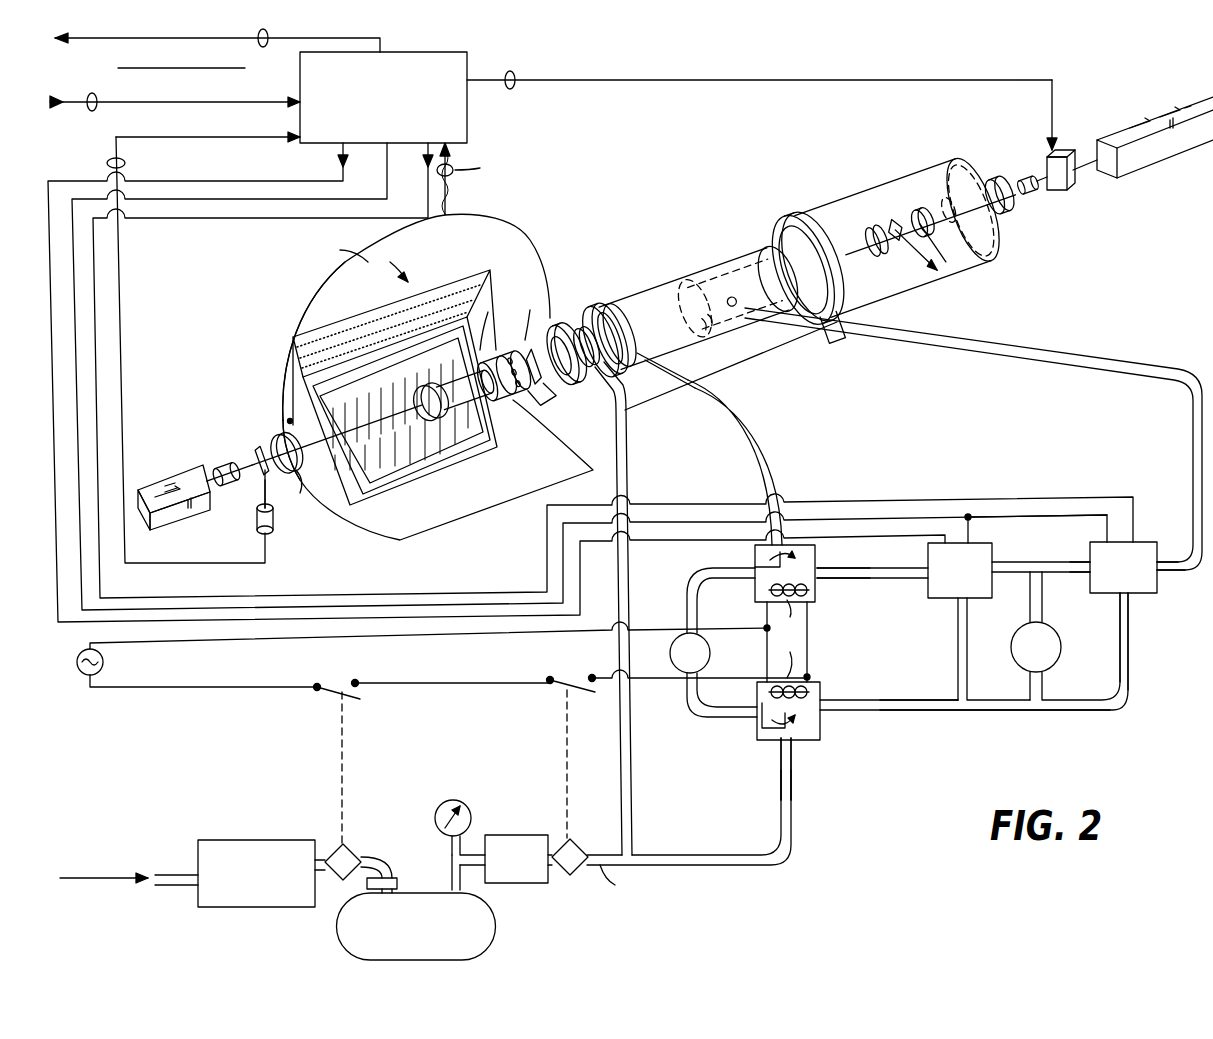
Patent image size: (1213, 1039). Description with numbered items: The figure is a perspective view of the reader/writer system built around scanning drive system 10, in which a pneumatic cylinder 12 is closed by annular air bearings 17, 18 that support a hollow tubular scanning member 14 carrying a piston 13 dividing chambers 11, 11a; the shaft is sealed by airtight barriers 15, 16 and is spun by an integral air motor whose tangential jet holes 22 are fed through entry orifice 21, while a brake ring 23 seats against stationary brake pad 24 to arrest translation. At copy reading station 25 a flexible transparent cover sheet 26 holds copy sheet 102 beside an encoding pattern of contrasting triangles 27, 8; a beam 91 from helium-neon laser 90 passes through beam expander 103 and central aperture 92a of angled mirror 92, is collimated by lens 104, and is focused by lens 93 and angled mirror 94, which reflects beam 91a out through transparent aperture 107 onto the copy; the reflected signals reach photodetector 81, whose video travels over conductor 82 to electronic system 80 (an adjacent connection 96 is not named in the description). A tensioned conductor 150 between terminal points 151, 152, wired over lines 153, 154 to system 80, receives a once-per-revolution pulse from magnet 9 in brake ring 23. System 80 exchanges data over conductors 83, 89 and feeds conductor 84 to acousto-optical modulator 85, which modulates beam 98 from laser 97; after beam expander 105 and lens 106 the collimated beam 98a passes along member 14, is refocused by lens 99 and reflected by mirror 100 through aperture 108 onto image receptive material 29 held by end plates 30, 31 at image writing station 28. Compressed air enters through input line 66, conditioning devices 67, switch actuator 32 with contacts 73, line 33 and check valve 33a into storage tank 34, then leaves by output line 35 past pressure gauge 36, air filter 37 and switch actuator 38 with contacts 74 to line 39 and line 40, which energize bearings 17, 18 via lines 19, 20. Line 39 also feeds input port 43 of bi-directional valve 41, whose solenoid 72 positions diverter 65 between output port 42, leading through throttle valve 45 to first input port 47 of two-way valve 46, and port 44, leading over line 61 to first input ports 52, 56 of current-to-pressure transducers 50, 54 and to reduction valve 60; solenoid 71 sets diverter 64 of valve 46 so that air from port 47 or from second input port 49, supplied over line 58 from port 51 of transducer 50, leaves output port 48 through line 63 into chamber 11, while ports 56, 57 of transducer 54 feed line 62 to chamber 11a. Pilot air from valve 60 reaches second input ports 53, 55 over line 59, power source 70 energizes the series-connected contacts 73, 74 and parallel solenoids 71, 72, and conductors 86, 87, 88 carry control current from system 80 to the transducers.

The optically contrasting triangle 8 is at (297, 345).
The permanent magnet 9 is at (503, 358).
The scanning drive system 10 is at (780, 340).
The chamber 11 is at (660, 292).
The chamber 11a is at (692, 285).
The pneumatic cylinder 12 is at (712, 280).
The piston 13 is at (708, 326).
The optical scanning member 14 is at (400, 455).
The internal airtight barrier 15 is at (522, 402).
The internal airtight barrier 16 is at (872, 238).
The annular air bearing 17 is at (604, 310).
The annular air bearing 18 is at (778, 250).
The air line 19 is at (610, 408).
The air line 20 is at (830, 335).
The entry orifice 21 is at (733, 308).
The air motor 22 is at (572, 382).
The brake ring 23 is at (564, 388).
The brake pad 24 is at (592, 308).
The copy reading station 25 is at (394, 264).
The cover sheet 26 is at (400, 542).
The optically contrasting triangle 27 is at (380, 316).
The image writing station 28 is at (900, 163).
The image receptive material 29 is at (990, 268).
The end plate 30 is at (803, 215).
The end plate 31 is at (970, 165).
The first pneumatic pressure-controlled switch actuator 32 is at (338, 845).
The line 33 is at (385, 858).
The check valve 33a is at (388, 892).
The air storage tank 34 is at (405, 890).
The output air line 35 is at (450, 885).
The pressure gauge 36 is at (436, 814).
The final air filter 37 is at (538, 838).
The second pneumatic pressure-controlled switch actuator 38 is at (565, 875).
The output air line 39 is at (620, 880).
The air line 40 is at (632, 800).
The first bi-directional air control valve 41 is at (815, 676).
The first output port 42 is at (752, 718).
The input port 43 is at (795, 750).
The port 44 is at (825, 712).
The throttle valve 45 is at (710, 658).
The second two-way air valve 46 is at (810, 605).
The first input port 47 is at (752, 580).
The output port 48 is at (815, 548).
The second input port 49 is at (822, 580).
The current-to-pressure transducer 50 is at (985, 550).
The port 51 is at (925, 562).
The first input port 52 is at (958, 605).
The second input port 53 is at (1028, 580).
The current-to-pressure transducer 54 is at (1092, 552).
The second input port 55 is at (1090, 578).
The first input port 56 is at (1118, 605).
The port 57 is at (1165, 575).
The line 58 is at (885, 575).
The line 59 is at (1015, 566).
The reduction valve 60 is at (1050, 665).
The line 61 is at (918, 712).
The line 62 is at (1135, 368).
The line 63 is at (776, 492).
The air diverter means 64 is at (752, 553).
The air diverter means 65 is at (785, 740).
The input air line 66 is at (188, 888).
The air cleaning, drying and pressure regulating devices 67 is at (258, 838).
The power source 70 is at (105, 664).
The electric solenoid 71 is at (788, 617).
The electric solenoid 72 is at (790, 657).
The normally-open switch contacts 73 is at (335, 694).
The normally-open switch contacts 74 is at (562, 690).
The electronic system 80 is at (468, 56).
The photodetector 81 is at (260, 532).
The conductor 82 is at (285, 137).
The conductor 83 is at (190, 100).
The conductor 84 is at (485, 82).
The acousto-optical light modulator 85 is at (1072, 150).
The conductor 86 is at (335, 175).
The conductor 87 is at (385, 195).
The conductor 88 is at (426, 214).
The conductor 89 is at (270, 46).
The helium-neon laser 90 is at (195, 474).
The copy reading beam 91 is at (222, 464).
The reflected reading beam 91a is at (300, 495).
The angled mirror 92 is at (280, 445).
The central aperture 92a is at (266, 480).
The lens 93 is at (432, 425).
The angled mirror 94 is at (513, 405).
The lead 96 is at (260, 500).
The laser 97 is at (1150, 150).
The image writing beam 98 is at (1082, 178).
The collimated writing beam 98a is at (962, 272).
The lens 99 is at (940, 232).
The mirror 100 is at (936, 252).
The copy sheet 102 is at (445, 470).
The beam expander 103 is at (258, 455).
The lens 104 is at (289, 421).
The beam expander 105 is at (1010, 178).
The lens 106 is at (1030, 195).
The transparent aperture 107 is at (498, 323).
The transparent aperture 108 is at (928, 222).
The electrical conductor 150 is at (290, 382).
The terminal point 151 is at (285, 415).
The terminal point 152 is at (540, 315).
The line 153 is at (339, 248).
The line 154 is at (500, 222).